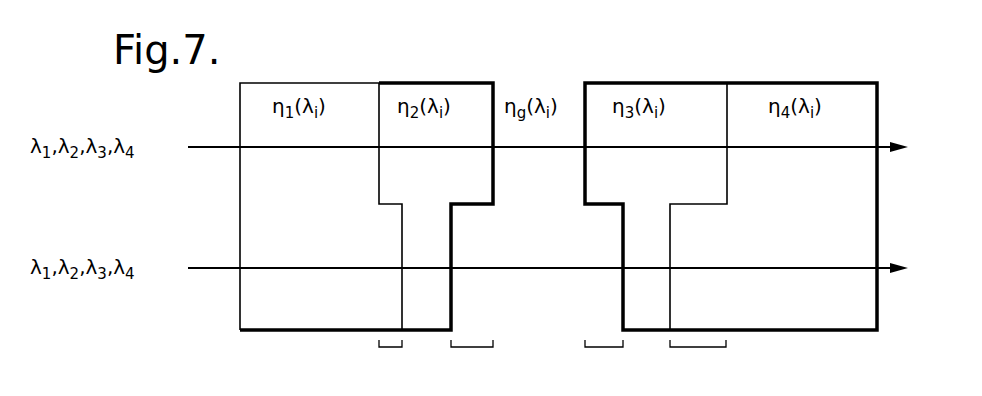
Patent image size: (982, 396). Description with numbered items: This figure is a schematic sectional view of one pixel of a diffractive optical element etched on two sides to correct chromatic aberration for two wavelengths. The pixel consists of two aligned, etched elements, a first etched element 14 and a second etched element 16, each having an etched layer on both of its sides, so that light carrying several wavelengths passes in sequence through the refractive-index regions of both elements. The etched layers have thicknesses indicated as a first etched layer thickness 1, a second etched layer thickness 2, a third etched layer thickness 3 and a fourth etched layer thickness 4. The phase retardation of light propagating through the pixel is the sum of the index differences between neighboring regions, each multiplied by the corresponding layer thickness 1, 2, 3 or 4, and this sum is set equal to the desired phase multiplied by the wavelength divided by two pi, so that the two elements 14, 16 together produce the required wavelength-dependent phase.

The first etched element 14 is at (433, 83).
The second etched element 16 is at (620, 83).
The first etched layer thickness 1 is at (390, 357).
The second etched layer thickness 2 is at (472, 357).
The third etched layer thickness 3 is at (604, 357).
The fourth etched layer thickness 4 is at (698, 357).